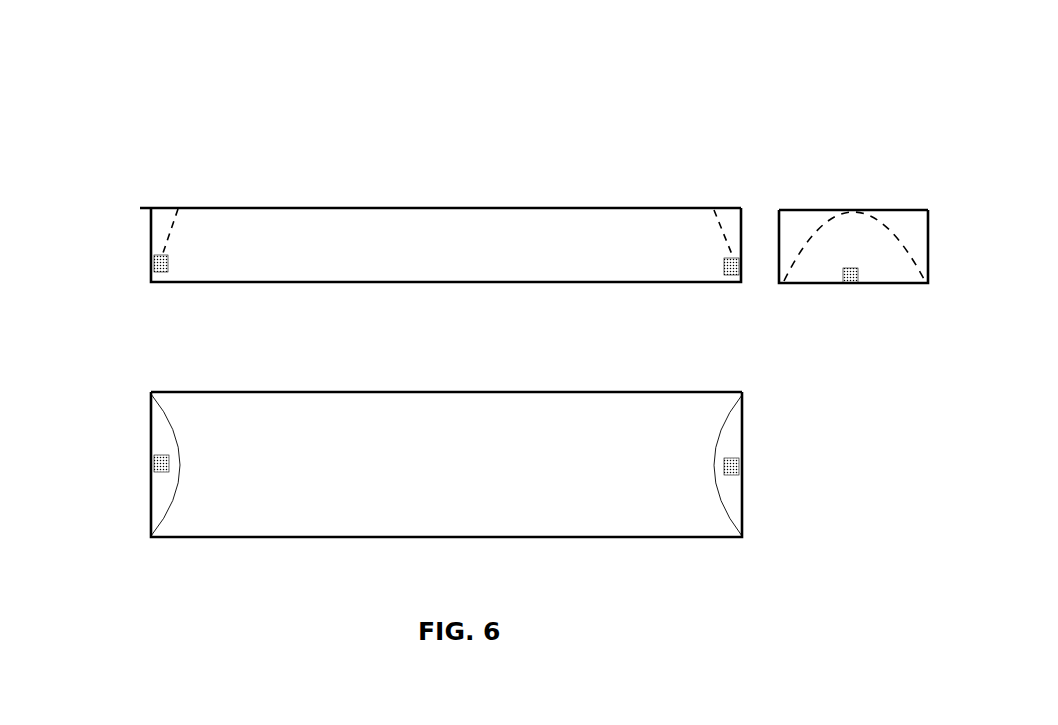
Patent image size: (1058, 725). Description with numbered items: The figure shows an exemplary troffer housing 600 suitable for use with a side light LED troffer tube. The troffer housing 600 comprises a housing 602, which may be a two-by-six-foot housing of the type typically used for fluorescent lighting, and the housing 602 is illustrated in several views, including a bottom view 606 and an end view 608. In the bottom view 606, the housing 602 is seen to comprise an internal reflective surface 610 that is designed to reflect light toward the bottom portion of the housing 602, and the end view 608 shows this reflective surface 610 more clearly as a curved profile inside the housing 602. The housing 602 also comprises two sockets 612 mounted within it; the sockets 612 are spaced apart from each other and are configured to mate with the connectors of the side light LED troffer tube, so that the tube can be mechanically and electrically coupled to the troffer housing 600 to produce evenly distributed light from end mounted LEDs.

The troffer housing 600 is at (178, 97).
The housing 602 is at (213, 207).
The bottom view 606 is at (122, 225).
The end view 608 is at (865, 167).
The internal reflective surface 610 is at (892, 232).
The sockets 612 is at (153, 468).